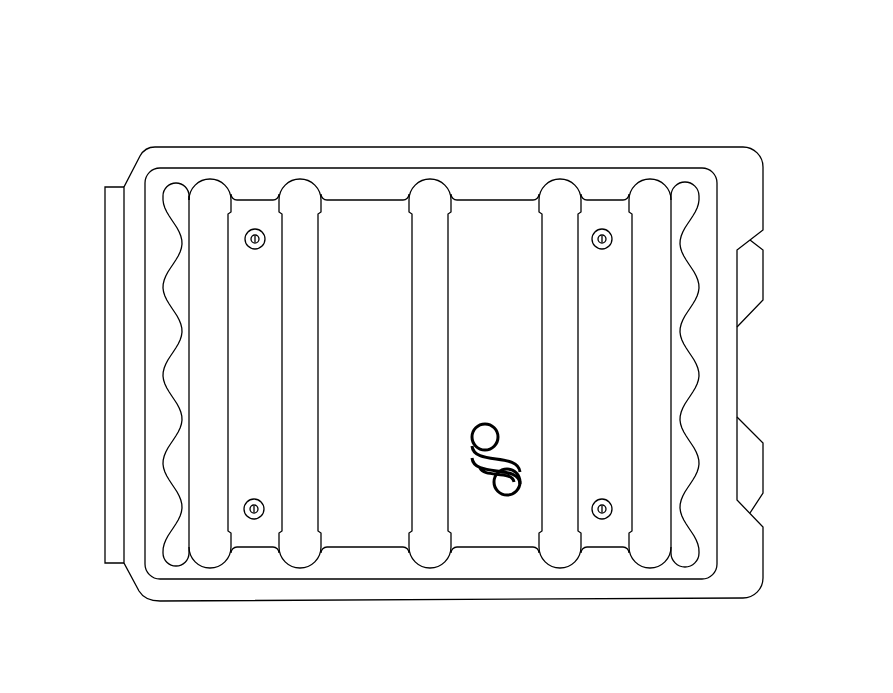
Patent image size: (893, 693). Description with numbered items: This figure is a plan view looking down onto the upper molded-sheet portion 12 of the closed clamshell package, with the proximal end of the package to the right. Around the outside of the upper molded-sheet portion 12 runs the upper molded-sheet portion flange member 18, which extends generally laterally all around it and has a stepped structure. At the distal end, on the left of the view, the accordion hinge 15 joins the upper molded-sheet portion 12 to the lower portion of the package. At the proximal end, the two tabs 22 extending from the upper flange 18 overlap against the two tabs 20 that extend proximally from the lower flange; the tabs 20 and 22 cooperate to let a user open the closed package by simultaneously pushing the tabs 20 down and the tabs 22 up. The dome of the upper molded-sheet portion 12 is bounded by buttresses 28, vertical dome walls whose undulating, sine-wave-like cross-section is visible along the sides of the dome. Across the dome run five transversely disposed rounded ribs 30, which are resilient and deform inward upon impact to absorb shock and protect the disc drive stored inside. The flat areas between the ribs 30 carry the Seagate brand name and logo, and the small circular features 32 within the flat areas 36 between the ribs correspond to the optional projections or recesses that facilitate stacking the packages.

The upper molded-sheet portion 12 is at (145, 135).
The accordion hinge 15 is at (113, 560).
The upper molded-sheet portion flange member 18 is at (178, 601).
The tabs (of lower flange) 20 is at (765, 278).
The tabs (of upper flange) 22 is at (761, 201).
The buttresses 28 is at (385, 197).
The rounded ribs 30 is at (232, 343).
The screw hole 32 is at (256, 229).
The divider 36 is at (277, 343).